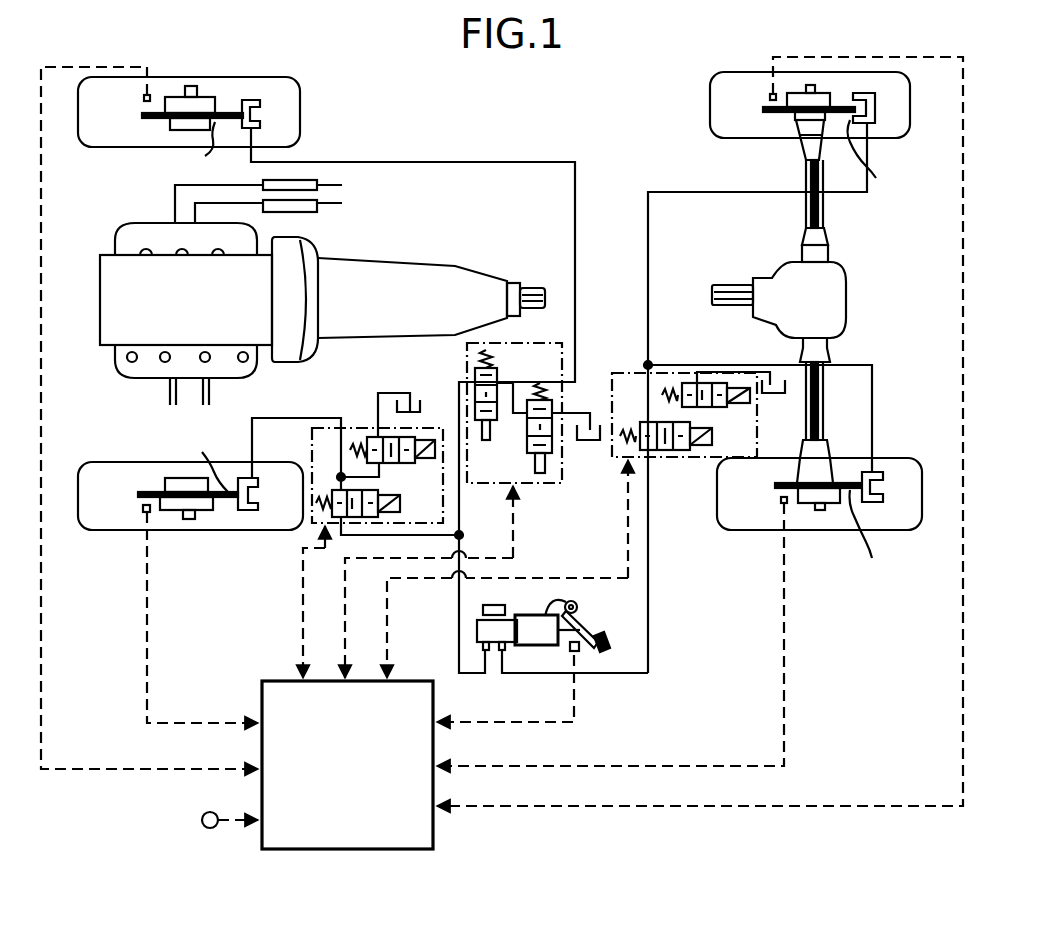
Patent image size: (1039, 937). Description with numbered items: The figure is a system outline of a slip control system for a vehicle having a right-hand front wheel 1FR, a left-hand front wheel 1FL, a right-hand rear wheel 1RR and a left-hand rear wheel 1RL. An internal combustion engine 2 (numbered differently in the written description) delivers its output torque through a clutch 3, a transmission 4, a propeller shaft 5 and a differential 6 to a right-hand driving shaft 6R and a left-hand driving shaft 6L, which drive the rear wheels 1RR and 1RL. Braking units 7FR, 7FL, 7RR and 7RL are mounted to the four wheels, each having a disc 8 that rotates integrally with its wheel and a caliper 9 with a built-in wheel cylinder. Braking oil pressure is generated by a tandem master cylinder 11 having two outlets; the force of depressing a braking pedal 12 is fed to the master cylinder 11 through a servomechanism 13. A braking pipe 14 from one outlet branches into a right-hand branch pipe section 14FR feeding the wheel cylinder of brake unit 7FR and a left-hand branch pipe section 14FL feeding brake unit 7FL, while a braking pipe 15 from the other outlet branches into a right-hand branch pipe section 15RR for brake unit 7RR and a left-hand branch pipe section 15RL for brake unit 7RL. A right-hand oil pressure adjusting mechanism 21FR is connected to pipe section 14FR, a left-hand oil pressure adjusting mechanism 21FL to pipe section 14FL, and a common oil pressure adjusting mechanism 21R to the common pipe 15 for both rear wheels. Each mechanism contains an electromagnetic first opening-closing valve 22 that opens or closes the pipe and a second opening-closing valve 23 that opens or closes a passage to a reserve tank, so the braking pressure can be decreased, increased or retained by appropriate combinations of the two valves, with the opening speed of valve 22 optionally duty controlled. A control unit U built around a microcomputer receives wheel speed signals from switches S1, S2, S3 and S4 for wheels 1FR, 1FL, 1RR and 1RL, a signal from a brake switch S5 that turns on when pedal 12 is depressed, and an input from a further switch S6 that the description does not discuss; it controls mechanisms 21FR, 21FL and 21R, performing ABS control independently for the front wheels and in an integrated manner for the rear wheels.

The right-hand front wheel 1FR is at (293, 124).
The left-hand front wheel 1FL is at (90, 523).
The right-hand rear wheel 1RR is at (898, 88).
The left-hand rear wheel 1RL is at (735, 523).
The engine 2 is at (104, 254).
The clutch 3 is at (306, 255).
The transmission 4 is at (403, 278).
The propeller shaft 5 is at (535, 290).
The differential 6 is at (832, 292).
The right-hand driving shaft 6R is at (823, 222).
The left-hand driving shaft 6L is at (826, 430).
The braking unit 7FR is at (195, 153).
The braking unit 7FL is at (202, 457).
The braking unit 7RR is at (890, 163).
The braking unit 7RL is at (877, 543).
The disc 8 is at (148, 120).
The caliper 9 is at (290, 95).
The master cylinder 11 is at (505, 606).
The braking pedal 12 is at (598, 636).
The servomechanism 13 is at (577, 607).
The braking pipe 14 is at (459, 632).
The right-hand branch pipe section 14FR is at (495, 163).
The left-hand branch pipe section 14FL is at (294, 418).
The braking pipe 15 is at (650, 556).
The right-hand branch pipe section 15RR is at (672, 192).
The left-hand branch pipe section 15RL is at (873, 385).
The left-hand oil pressure adjusting mechanism 21FL is at (355, 419).
The right-hand oil pressure adjusting mechanism 21FR is at (538, 486).
The common oil pressure adjusting mechanism 21R is at (702, 460).
The first opening-closing valve 22 is at (392, 482).
The second opening-closing valve 23 is at (410, 437).
The switch S1 is at (144, 100).
The switch S2 is at (148, 512).
The switch S3 is at (770, 96).
The switch S4 is at (784, 503).
The brake switch S5 is at (578, 652).
The vehicle speed sensor S6 is at (202, 820).
The control unit U is at (433, 830).